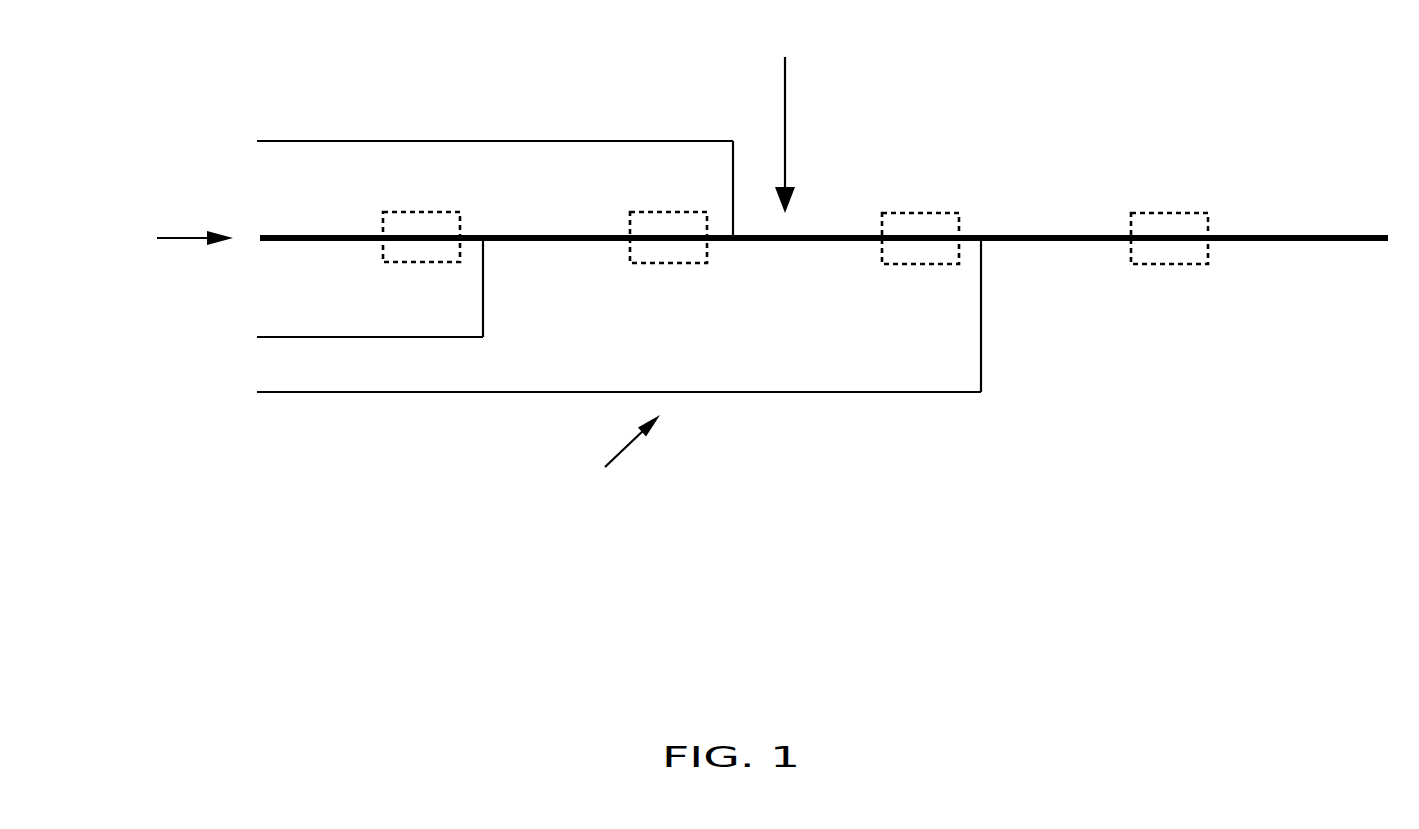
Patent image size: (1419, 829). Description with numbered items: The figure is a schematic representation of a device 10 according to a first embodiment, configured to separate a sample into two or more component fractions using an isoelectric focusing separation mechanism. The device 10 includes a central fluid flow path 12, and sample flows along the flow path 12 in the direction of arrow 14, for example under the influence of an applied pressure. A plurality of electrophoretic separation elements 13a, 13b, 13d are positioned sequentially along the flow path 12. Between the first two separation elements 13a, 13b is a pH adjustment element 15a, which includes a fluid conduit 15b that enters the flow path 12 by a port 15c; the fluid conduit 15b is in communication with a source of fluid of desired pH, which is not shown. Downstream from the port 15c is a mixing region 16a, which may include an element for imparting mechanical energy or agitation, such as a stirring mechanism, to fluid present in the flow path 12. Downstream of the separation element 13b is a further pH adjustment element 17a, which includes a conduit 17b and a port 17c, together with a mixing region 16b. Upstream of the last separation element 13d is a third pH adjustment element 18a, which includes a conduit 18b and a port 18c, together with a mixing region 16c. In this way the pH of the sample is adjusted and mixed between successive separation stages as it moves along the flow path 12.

The device 10 is at (902, 477).
The central fluid flow path 12 is at (298, 242).
The electrophoretic separation element 13a is at (405, 224).
The electrophoretic separation element 13b is at (668, 253).
The electrophoretic separation element 13d is at (1168, 255).
The arrow 14 is at (175, 240).
The pH adjustment element 15a is at (298, 340).
The fluid conduit 15b is at (485, 307).
The port 15c is at (496, 237).
The mixing region 16a is at (575, 237).
The mixing region 16b is at (789, 117).
The mixing region 16c is at (1063, 243).
The pH adjustment element 17a is at (616, 141).
The conduit 17b is at (733, 200).
The port 17c is at (733, 240).
The pH adjustment element 18a is at (619, 502).
The conduit 18b is at (983, 310).
The port 18c is at (998, 238).